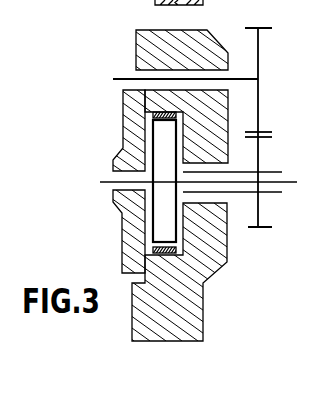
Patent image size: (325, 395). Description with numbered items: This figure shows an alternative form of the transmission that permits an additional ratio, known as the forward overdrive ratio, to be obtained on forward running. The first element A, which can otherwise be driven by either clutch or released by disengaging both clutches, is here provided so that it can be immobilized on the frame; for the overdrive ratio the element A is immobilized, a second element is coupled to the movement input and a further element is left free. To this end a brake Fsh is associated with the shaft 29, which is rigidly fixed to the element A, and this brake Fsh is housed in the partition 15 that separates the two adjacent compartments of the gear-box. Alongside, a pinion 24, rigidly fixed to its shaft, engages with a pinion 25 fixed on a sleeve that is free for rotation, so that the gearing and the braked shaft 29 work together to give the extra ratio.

The partition 15 is at (190, 315).
The pinion 24 is at (260, 60).
The pinion 25 is at (259, 213).
The shaft 29 is at (107, 183).
The first element A is at (287, 182).
The brake Fsh is at (163, 112).